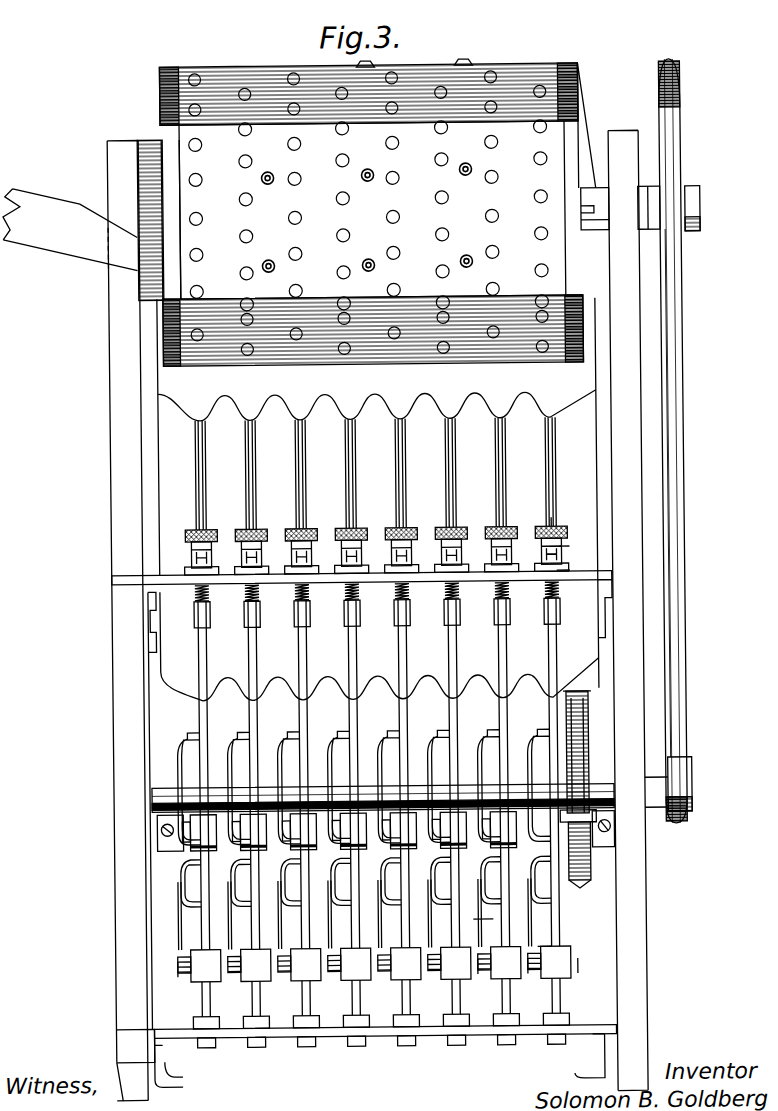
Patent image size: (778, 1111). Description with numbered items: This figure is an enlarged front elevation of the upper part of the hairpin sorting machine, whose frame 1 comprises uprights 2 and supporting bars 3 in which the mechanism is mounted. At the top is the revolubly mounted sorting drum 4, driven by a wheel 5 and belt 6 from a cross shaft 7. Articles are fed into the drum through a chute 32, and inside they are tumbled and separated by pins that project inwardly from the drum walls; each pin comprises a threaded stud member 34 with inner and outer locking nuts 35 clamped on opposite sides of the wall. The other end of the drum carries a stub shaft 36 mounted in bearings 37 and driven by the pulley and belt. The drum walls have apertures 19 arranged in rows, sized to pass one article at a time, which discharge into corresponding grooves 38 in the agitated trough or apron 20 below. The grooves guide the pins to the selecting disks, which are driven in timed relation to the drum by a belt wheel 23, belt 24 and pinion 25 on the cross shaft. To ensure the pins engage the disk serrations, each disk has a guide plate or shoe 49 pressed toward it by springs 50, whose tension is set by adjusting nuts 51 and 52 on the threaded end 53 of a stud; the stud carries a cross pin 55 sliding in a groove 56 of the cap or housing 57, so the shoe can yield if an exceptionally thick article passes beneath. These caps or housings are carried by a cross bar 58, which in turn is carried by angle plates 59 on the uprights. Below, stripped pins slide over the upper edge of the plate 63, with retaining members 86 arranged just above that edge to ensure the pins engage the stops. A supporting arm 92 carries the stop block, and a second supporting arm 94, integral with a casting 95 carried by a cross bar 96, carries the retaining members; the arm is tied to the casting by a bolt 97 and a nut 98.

The frame 1 is at (645, 843).
The uprights 2 is at (125, 655).
The supporting bars 3 is at (160, 1047).
The drum 4 is at (508, 70).
The wheel 5 is at (683, 128).
The belt 6 is at (684, 468).
The cross shaft 7 is at (596, 790).
The apertures 19 is at (528, 172).
The trough or apron 20 is at (598, 542).
The belt wheel 23 is at (590, 730).
The belt 24 is at (568, 890).
The pinion 25 is at (692, 775).
The chute 32 is at (34, 208).
The threaded stud member 34 is at (368, 67).
The locking nut 35 is at (466, 65).
The stub shaft 36 is at (704, 214).
The bearings 37 is at (592, 185).
The grooves 38 is at (250, 498).
The guide plate or shoe 49 is at (506, 642).
The springs 50 is at (510, 600).
The adjusting nut 51 is at (541, 548).
The adjusting nut 52 is at (562, 530).
The threaded end 53 is at (546, 527).
The cross pin 55 is at (546, 557).
The groove 56 is at (568, 550).
The cap or housing 57 is at (560, 572).
The cross bar 58 is at (148, 578).
The angle plates 59 is at (148, 610).
The plate 63 is at (540, 898).
The retaining members 86 is at (545, 750).
The arm 92 is at (300, 978).
The supporting arm 94 is at (520, 948).
The casting 95 is at (500, 990).
The cross bar 96 is at (462, 1040).
The bolt 97 is at (212, 965).
The nut 98 is at (492, 980).